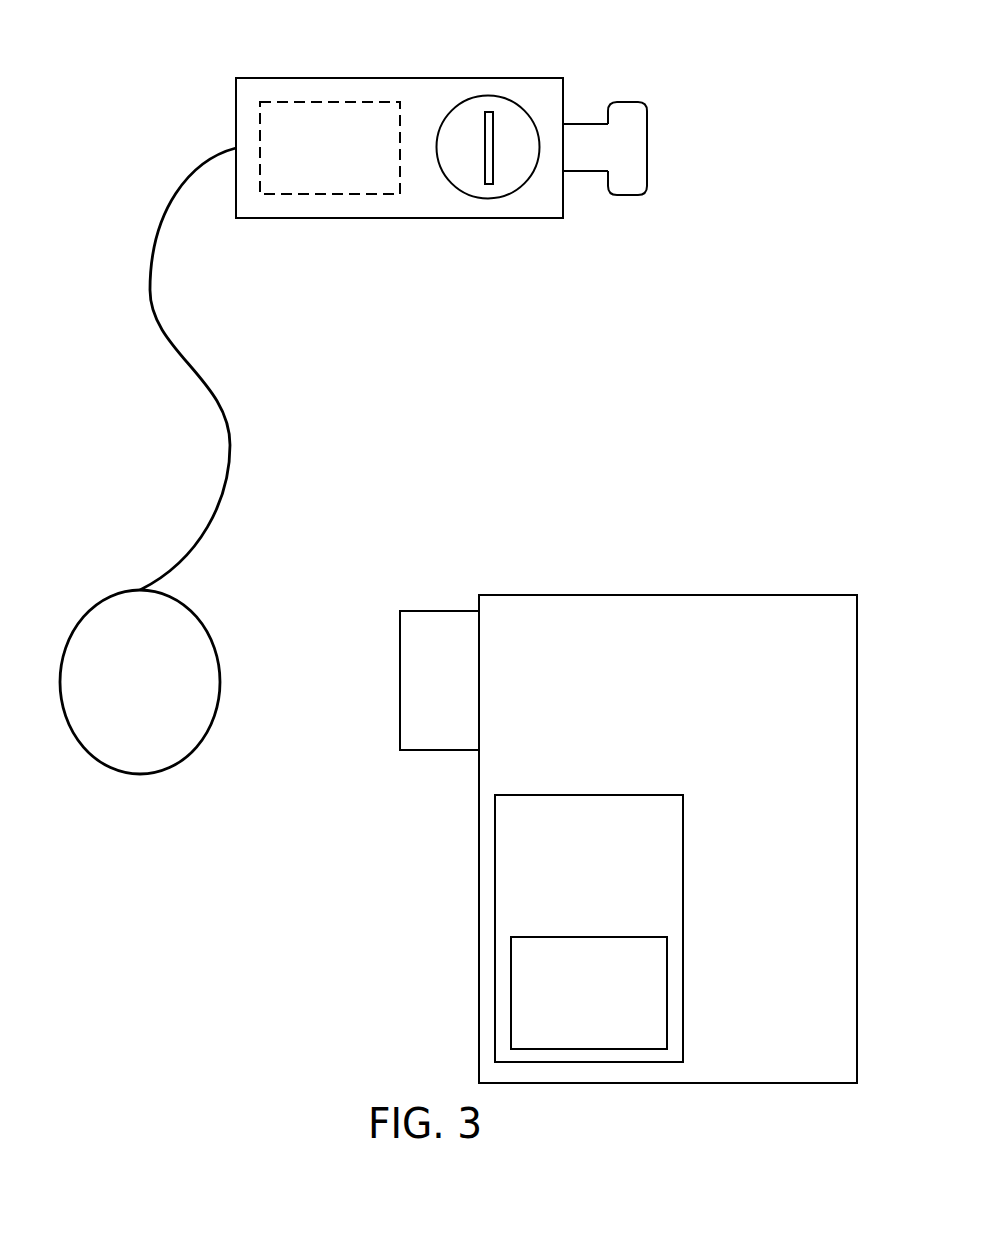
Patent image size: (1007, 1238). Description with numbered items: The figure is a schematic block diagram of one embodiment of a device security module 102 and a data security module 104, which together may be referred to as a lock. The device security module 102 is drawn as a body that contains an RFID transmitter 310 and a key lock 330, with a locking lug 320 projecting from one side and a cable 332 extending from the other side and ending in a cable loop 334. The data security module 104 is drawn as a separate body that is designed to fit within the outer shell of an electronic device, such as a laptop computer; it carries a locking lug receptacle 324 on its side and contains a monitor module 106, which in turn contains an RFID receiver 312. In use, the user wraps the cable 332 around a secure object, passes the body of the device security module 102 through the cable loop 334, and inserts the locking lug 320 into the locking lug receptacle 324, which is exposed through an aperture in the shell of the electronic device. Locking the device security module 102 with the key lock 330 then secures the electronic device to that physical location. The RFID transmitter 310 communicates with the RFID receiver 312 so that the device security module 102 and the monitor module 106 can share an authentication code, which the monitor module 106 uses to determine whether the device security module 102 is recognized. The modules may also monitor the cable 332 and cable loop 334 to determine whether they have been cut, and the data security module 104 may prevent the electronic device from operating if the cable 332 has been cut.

The device security module 102 is at (226, 113).
The RFID transmitter 310 is at (313, 182).
The locking lug 320 is at (658, 143).
The key lock 330 is at (496, 210).
The cable 332 is at (240, 438).
The cable loop 334 is at (82, 600).
The locking lug receptacle 324 is at (442, 598).
The data security module 104 is at (650, 686).
The monitor module 106 is at (572, 872).
The RFID receiver 312 is at (572, 1016).